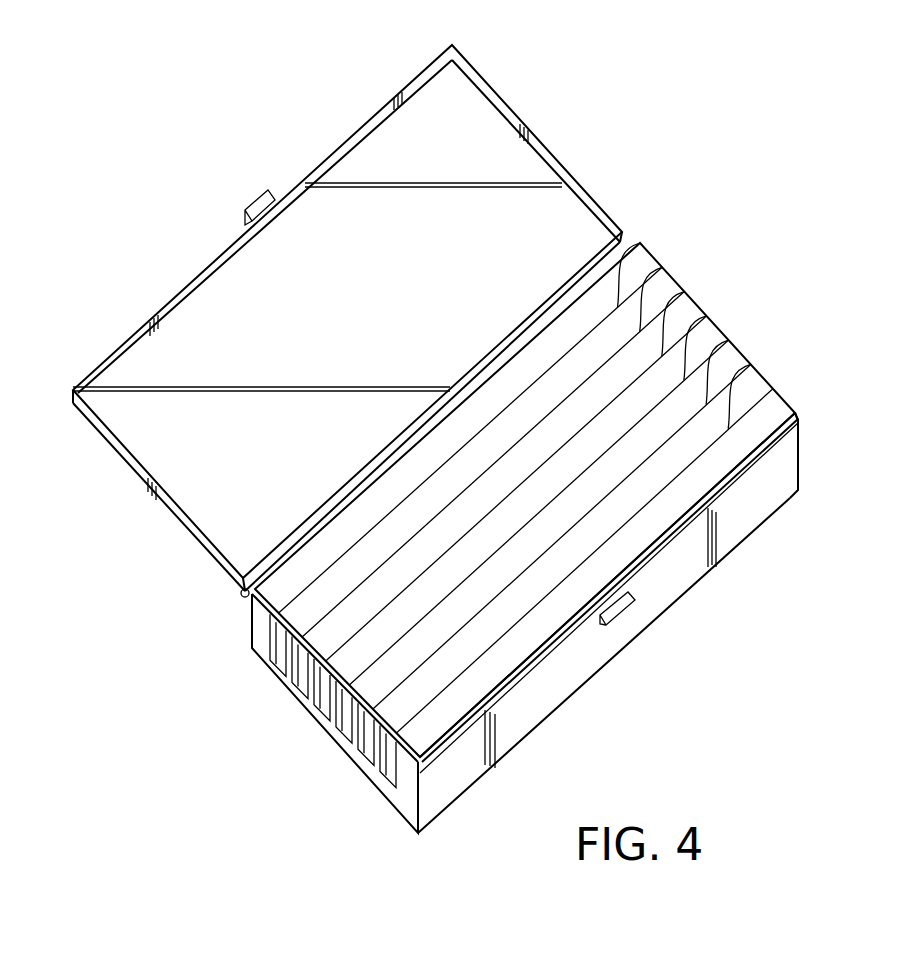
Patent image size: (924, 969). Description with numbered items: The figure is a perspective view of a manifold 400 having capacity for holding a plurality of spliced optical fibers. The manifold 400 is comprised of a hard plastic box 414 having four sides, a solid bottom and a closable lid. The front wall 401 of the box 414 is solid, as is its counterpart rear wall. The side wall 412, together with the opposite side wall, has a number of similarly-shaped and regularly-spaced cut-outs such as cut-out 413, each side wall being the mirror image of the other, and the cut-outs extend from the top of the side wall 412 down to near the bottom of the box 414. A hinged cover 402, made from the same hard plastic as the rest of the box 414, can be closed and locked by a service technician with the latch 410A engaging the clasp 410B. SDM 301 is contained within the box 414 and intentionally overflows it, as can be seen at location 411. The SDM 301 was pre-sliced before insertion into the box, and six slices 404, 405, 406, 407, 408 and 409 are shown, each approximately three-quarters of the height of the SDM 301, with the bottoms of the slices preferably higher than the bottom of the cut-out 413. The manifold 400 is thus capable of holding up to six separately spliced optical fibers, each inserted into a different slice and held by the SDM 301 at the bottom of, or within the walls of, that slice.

The manifold 400 is at (680, 134).
The hinged cover 402 is at (214, 512).
The latch 410A is at (258, 197).
The front wall 401 is at (732, 532).
The slice 404 is at (765, 391).
The slice 405 is at (738, 363).
The slice 406 is at (717, 336).
The slice 407 is at (694, 311).
The slice 408 is at (672, 283).
The slice 409 is at (650, 256).
The location 411 is at (808, 414).
The SDM 301 is at (678, 468).
The clasp 410B is at (632, 614).
The hard plastic box 414 is at (537, 740).
The side wall 412 is at (408, 822).
The cut-out 413 is at (362, 778).